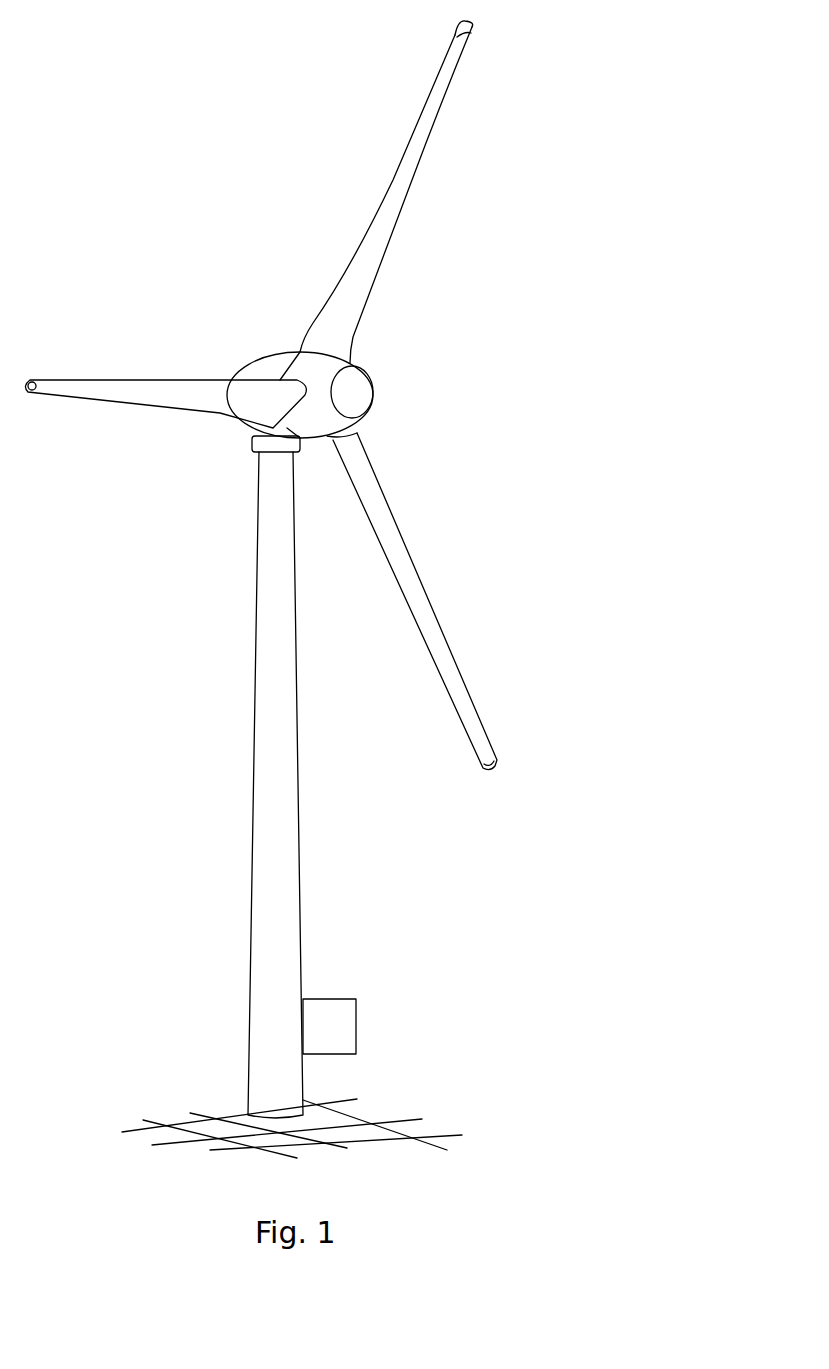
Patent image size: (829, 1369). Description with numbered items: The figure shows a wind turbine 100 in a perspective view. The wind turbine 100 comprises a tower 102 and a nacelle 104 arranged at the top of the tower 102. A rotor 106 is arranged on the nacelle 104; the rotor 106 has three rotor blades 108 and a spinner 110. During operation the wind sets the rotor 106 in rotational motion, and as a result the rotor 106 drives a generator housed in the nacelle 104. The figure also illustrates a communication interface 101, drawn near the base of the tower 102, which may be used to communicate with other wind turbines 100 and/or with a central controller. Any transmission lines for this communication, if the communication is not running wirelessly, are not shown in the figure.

The wind turbine 100 is at (308, 569).
The controller 101 is at (347, 999).
The tower 102 is at (282, 820).
The nacelle 104 is at (270, 370).
The rotor 106 is at (308, 395).
The rotor blades 108 is at (417, 150).
The hub 110 is at (358, 392).